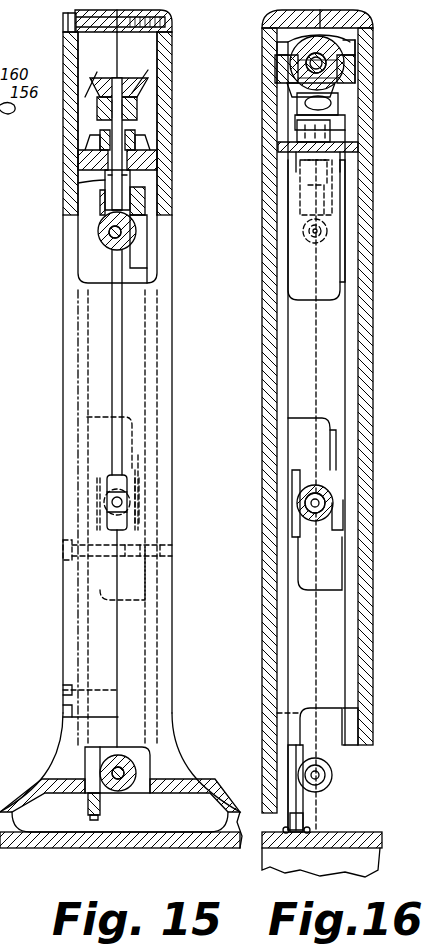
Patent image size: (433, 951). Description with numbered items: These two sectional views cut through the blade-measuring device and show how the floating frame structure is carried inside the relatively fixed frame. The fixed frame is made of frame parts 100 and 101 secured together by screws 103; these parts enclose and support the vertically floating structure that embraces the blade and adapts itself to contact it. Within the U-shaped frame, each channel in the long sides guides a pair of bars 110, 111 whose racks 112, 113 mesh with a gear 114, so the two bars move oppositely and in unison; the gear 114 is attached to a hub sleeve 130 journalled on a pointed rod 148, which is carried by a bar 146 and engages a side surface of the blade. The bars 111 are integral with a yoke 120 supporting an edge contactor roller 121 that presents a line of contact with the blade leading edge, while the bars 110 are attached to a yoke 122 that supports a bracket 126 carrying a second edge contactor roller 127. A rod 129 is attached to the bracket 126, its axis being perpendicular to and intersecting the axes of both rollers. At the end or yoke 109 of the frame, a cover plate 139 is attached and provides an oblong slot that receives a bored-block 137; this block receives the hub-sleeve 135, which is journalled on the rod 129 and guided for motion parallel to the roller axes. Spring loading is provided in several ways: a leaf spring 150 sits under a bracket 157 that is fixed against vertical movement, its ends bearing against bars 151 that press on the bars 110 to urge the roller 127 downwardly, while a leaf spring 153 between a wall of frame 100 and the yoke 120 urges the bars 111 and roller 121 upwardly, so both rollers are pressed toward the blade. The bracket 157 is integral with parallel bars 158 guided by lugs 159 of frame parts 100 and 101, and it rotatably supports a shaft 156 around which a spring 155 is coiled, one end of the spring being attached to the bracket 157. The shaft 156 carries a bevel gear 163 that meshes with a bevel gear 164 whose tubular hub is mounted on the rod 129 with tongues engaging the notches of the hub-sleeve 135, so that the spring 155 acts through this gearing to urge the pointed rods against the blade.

In FIG. 15, the frame part 100 is at (173, 140).
In FIG. 16, the frame part 100 is at (374, 203).
In FIG. 15, the frame part 101 is at (70, 170).
In FIG. 16, the frame part 101 is at (276, 208).
In FIG. 15, the screw 103 is at (63, 22).
In FIG. 15, the yoke of U-shaped frame 109 is at (104, 182).
In FIG. 15, the bar 110 is at (148, 258).
In FIG. 16, the bar 110 is at (343, 232).
In FIG. 16, the bar 111 is at (290, 643).
In FIG. 16, the rack 112 is at (340, 520).
In FIG. 16, the rack 113 is at (292, 533).
In FIG. 16, the gear 114 is at (330, 490).
In FIG. 15, the yoke 120 is at (105, 800).
In FIG. 16, the yoke 120 is at (340, 752).
In FIG. 15, the edge contactor roller 121 is at (136, 768).
In FIG. 16, the edge contactor roller 121 is at (333, 776).
In FIG. 15, the yoke 122 is at (146, 200).
In FIG. 15, the bracket 126 is at (104, 205).
In FIG. 15, the edge contactor roller 127 is at (137, 231).
In FIG. 16, the edge contactor roller 127 is at (296, 236).
In FIG. 15, the rod 129 is at (119, 178).
In FIG. 16, the hub sleeve 130 is at (334, 503).
In FIG. 15, the hub-sleeve 135 is at (136, 150).
In FIG. 15, the bored-block 137 is at (108, 128).
In FIG. 15, the cover plate 139 is at (82, 148).
In FIG. 15, the bar 146 is at (112, 342).
In FIG. 16, the bar 146 is at (312, 328).
In FIG. 15, the pointed rod 148 is at (112, 502).
In FIG. 16, the leaf spring 150 is at (340, 125).
In FIG. 16, the bar 151 is at (340, 172).
In FIG. 15, the leaf spring 153 is at (88, 810).
In FIG. 16, the leaf spring 153 is at (303, 818).
In FIG. 16, the spring 155 is at (356, 53).
In FIG. 16, the shaft 156 is at (295, 65).
In FIG. 15, the bracket 157 is at (137, 108).
In FIG. 16, the bracket 157 is at (335, 45).
In FIG. 16, the parallel bar 158 is at (296, 78).
In FIG. 16, the lug 159 is at (280, 62).
In FIG. 16, the bevel gear 163 is at (283, 48).
In FIG. 15, the bevel gear 164 is at (132, 82).
In FIG. 16, the bevel gear 164 is at (352, 92).